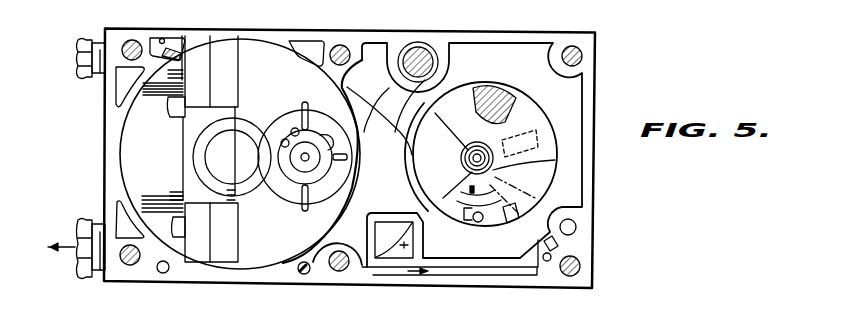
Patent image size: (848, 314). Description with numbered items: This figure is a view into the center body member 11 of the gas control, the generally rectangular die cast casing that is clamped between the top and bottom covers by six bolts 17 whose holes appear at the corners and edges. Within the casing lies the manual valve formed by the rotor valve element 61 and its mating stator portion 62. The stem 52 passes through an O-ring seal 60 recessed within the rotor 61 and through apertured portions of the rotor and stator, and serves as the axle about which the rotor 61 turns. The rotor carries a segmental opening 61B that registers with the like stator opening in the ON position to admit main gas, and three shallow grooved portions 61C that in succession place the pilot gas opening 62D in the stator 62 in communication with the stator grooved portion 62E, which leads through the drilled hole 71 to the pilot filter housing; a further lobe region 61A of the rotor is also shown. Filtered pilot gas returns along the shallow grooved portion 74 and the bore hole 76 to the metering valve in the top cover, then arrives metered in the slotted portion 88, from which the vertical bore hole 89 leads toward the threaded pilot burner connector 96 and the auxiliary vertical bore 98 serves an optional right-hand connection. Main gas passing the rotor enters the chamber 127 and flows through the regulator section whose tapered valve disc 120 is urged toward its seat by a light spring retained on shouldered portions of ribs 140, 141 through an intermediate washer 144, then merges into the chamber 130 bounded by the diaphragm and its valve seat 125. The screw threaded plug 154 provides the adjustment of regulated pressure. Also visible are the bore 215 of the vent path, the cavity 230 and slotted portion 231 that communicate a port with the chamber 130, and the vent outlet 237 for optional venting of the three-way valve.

The center body member 11 is at (587, 100).
The bolts 17 is at (133, 43).
The stem 52 is at (470, 154).
The O-ring seal 60 is at (466, 163).
The rotor valve element 61 is at (528, 118).
The cam lobe 61A is at (491, 93).
The segmental opening 61B is at (423, 147).
The shallow grooved portions 61C is at (539, 134).
The stator portion 62 is at (503, 237).
The pilot gas opening 62D is at (466, 214).
The grooved portion 62E is at (508, 223).
The drilled hole 71 is at (475, 224).
The shallow grooved portion 74 is at (768, 303).
The bore hole 76 is at (577, 225).
The slotted portion 88 is at (377, 272).
The vertical bore hole 89 is at (302, 266).
The pilot burner connector 96 is at (81, 273).
The auxiliary vertical bore 98 is at (560, 248).
The valve disc 120 is at (293, 190).
The valve seat 125 is at (242, 127).
The chamber 127 is at (372, 111).
The chamber 130 is at (247, 63).
The rib 140 is at (297, 173).
The rib 141 is at (314, 139).
The washer 144 is at (331, 207).
The screw threaded plug 154 is at (424, 55).
The bore 215 is at (163, 274).
The cavity 230 is at (167, 40).
The slotted portion 231 is at (176, 57).
The vent outlet 237 is at (88, 38).